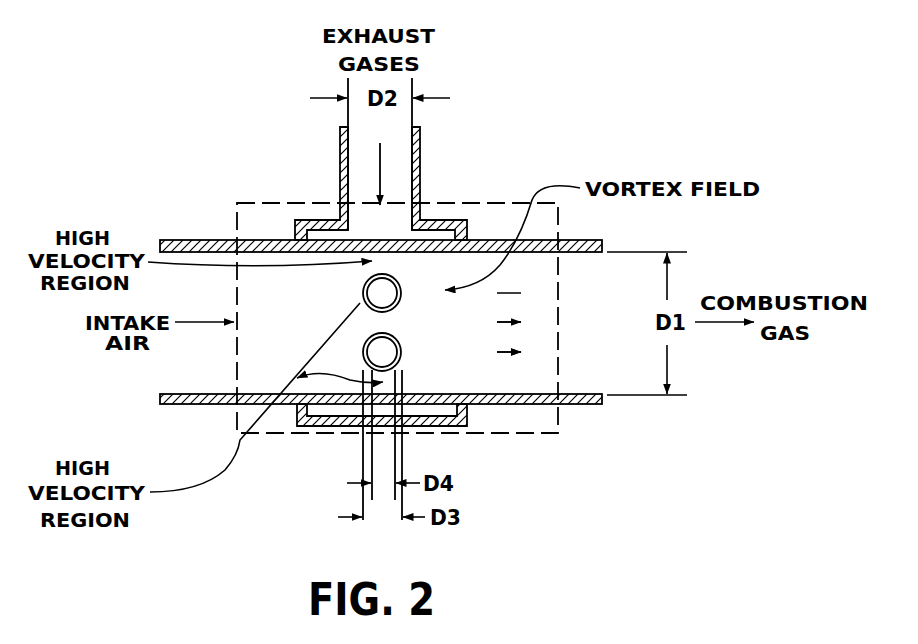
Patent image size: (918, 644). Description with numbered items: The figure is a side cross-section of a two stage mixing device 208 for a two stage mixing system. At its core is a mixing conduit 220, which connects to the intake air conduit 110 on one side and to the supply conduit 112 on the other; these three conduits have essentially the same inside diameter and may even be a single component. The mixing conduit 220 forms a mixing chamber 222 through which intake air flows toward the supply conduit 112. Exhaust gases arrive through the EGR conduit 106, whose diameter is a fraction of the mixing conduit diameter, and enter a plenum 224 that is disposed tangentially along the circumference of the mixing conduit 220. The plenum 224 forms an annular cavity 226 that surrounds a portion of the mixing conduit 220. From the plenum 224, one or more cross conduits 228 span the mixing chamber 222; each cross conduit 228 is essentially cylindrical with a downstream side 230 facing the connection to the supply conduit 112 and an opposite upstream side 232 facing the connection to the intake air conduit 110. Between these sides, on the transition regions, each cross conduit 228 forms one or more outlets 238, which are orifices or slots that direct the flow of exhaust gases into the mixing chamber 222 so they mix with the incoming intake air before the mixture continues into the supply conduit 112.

The EGR conduit 106 is at (419, 172).
The intake air conduit 110 is at (162, 240).
The supply conduit 112 is at (603, 241).
The two stage mixing device 208 is at (257, 203).
The mixing conduit 220 is at (257, 240).
The mixing chamber 222 is at (367, 323).
The plenum 224 is at (441, 320).
The annular cavity 226 is at (320, 228).
The cross conduit 228 is at (398, 311).
The downstream side 230 is at (406, 284).
The upstream side 232 is at (360, 297).
The outlet 238 is at (385, 274).